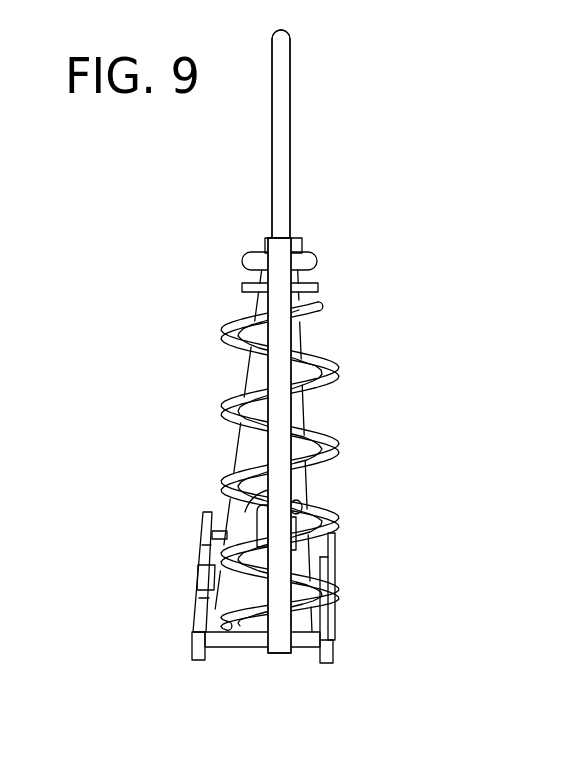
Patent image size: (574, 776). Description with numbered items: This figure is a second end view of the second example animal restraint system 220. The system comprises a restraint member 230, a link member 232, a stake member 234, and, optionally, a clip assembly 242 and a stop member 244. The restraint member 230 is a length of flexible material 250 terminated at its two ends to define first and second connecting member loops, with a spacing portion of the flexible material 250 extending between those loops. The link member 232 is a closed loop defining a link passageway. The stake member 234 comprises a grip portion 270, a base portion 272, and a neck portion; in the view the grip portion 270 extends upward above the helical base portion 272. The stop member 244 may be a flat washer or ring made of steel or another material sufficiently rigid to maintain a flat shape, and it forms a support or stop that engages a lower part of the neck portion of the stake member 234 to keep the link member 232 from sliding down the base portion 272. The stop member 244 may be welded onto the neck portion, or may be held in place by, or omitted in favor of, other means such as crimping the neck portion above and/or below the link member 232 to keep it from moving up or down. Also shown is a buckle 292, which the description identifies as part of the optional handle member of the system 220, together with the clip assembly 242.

The animal restraint system 220 is at (228, 160).
The restraint member 230 is at (266, 450).
The link member 232 is at (318, 257).
The stake member 234 is at (292, 120).
The clip assembly 242 is at (307, 493).
The stop member 244 is at (318, 287).
The flexible material 250 is at (278, 414).
The grip portion 270 is at (281, 158).
The base portion 272 is at (313, 363).
The buckle 292 is at (195, 583).